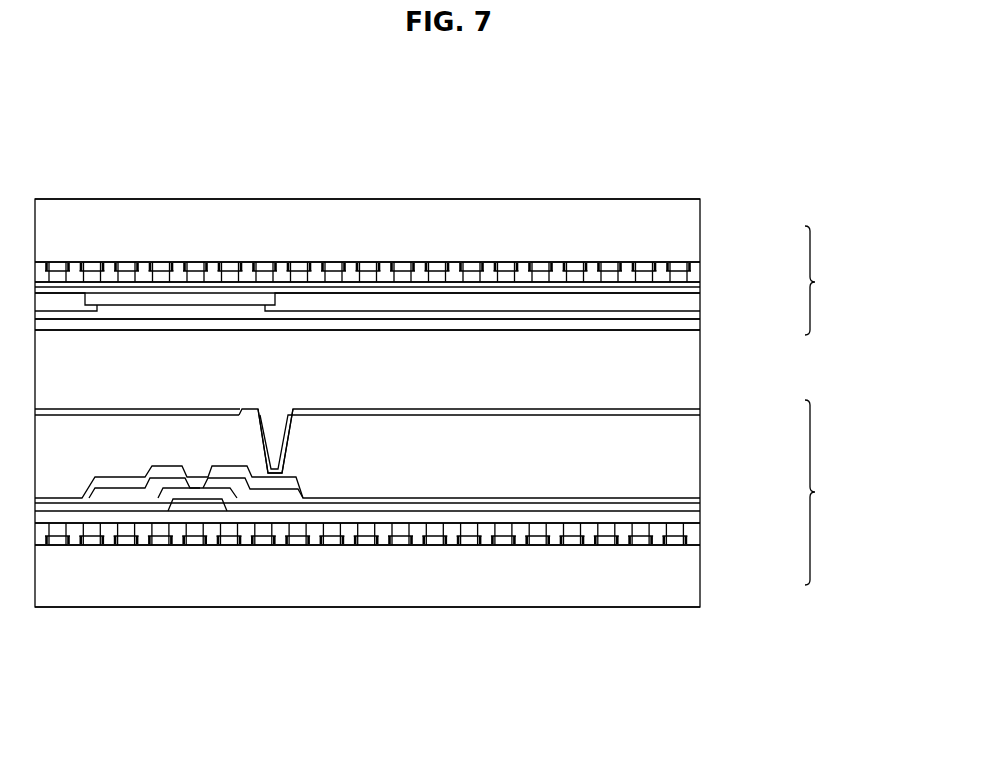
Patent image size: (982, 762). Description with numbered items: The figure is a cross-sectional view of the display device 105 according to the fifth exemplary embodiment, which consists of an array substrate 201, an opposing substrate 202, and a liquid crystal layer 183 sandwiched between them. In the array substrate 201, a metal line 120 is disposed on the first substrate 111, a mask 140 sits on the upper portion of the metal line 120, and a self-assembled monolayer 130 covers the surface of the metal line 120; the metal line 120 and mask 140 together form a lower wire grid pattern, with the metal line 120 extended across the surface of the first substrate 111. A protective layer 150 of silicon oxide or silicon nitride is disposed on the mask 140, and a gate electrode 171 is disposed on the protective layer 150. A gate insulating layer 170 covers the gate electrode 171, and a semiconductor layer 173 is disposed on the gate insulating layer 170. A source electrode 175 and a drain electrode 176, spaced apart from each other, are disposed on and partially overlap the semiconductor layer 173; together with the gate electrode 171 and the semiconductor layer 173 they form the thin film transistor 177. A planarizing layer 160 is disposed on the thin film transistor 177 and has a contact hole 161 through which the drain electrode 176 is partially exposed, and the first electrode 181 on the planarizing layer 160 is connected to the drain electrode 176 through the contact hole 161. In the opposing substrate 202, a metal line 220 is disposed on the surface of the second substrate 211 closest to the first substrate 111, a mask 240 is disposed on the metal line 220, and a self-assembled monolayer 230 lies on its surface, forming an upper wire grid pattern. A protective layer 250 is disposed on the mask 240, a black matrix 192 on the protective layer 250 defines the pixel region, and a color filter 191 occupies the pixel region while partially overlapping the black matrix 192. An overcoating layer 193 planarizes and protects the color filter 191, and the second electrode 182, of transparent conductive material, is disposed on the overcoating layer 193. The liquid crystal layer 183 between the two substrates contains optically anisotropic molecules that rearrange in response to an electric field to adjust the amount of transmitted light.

The display device 105 is at (86, 131).
The first substrate 111 is at (688, 575).
The metal line 120 is at (677, 541).
The self-assembled monolayer 130 is at (660, 538).
The mask 140 is at (677, 530).
The protective layer 150 is at (686, 518).
The planarizing layer 160 is at (685, 456).
The contact hole 161 is at (275, 408).
The gate insulating layer 170 is at (418, 507).
The gate electrode 171 is at (200, 505).
The semiconductor layer 173 is at (252, 492).
The source electrode 175 is at (150, 483).
The drain electrode 176 is at (285, 480).
The thin film transistor 177 is at (197, 592).
The first electrode 181 is at (678, 412).
The second electrode 182 is at (685, 323).
The liquid crystal layer 183 is at (685, 372).
The color filter 191 is at (350, 302).
The black matrix 192 is at (215, 302).
The overcoating layer 193 is at (148, 312).
The array substrate 201 is at (832, 492).
The opposing substrate 202 is at (832, 280).
The second substrate 211 is at (687, 228).
The metal line 220 is at (675, 265).
The self-assembled monolayer 230 is at (658, 265).
The mask 240 is at (675, 281).
The protective layer 250 is at (628, 290).